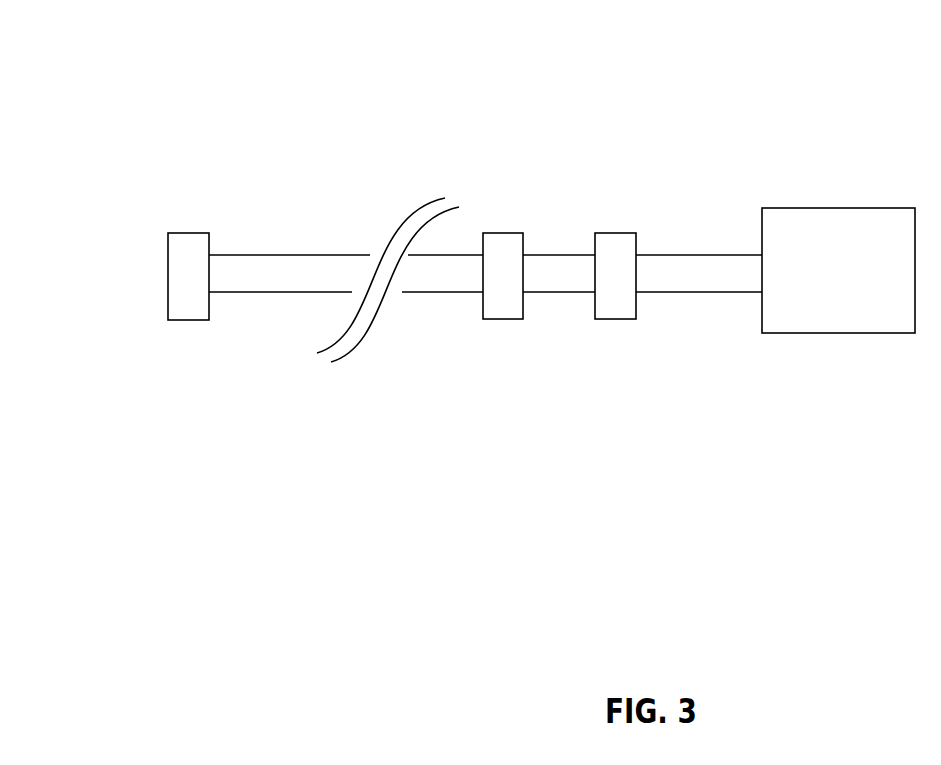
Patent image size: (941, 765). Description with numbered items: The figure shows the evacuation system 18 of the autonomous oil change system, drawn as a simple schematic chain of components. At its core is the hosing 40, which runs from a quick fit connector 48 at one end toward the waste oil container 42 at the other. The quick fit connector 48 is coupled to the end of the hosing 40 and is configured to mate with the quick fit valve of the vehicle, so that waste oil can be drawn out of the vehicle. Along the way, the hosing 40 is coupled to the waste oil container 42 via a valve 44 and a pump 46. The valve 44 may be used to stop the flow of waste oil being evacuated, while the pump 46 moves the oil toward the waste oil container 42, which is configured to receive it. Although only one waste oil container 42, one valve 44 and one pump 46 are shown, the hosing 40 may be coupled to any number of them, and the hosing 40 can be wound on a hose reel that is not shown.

The evacuation system 18 is at (160, 54).
The hosing 40 is at (272, 256).
The waste oil container 42 is at (851, 320).
The valve 44 is at (503, 233).
The pump 46 is at (614, 233).
The quick fit connector 48 is at (190, 233).